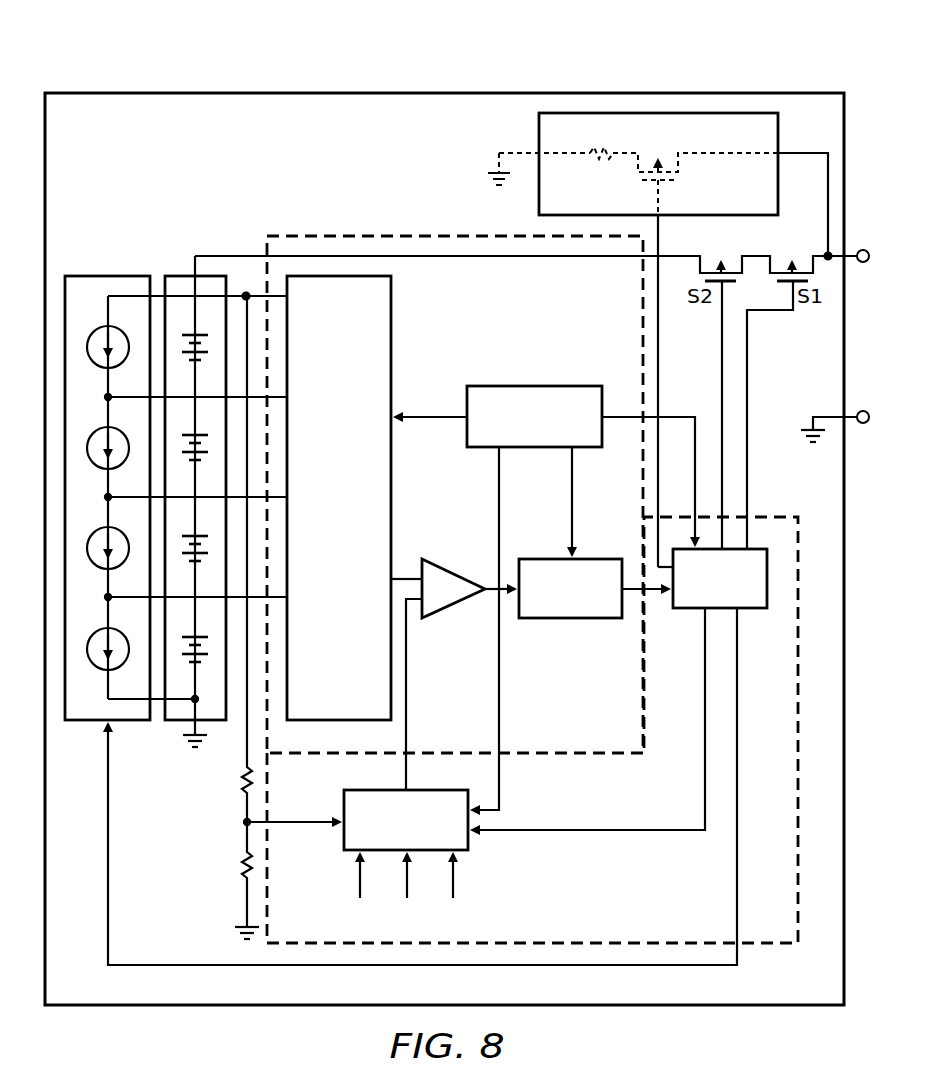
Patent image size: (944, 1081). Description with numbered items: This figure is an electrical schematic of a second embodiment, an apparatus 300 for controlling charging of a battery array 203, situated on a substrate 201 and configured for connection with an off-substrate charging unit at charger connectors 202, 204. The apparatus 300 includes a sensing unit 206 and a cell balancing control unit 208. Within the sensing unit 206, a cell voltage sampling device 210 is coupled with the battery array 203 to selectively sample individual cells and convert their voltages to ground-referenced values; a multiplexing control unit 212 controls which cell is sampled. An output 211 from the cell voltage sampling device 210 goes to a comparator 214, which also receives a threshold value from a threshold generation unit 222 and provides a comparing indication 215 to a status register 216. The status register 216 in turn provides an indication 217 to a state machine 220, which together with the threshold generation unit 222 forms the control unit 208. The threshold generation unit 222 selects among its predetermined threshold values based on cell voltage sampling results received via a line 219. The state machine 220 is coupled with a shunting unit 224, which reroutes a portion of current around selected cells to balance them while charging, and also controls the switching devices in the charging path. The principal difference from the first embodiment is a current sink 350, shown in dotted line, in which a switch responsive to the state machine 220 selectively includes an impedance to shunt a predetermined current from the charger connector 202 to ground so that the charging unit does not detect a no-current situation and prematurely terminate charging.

The apparatus 300 is at (444, 508).
The substrate 201 is at (266, 176).
The shunting unit 224 is at (100, 276).
The battery array 203 is at (178, 276).
The sensing unit 206 is at (440, 236).
The cell voltage sampling device 210 is at (320, 554).
The multiplexing control unit 212 is at (540, 386).
The output 211 is at (406, 579).
The comparator 214 is at (445, 612).
The comparing indication 215 is at (492, 585).
The status register 216 is at (576, 618).
The indication 217 is at (650, 590).
The state machine 220 is at (746, 608).
The line 219 is at (247, 750).
The threshold generation unit 222 is at (345, 840).
The cell balancing control unit 208 is at (765, 943).
The current sink 350 is at (539, 140).
The charger connector 202 is at (863, 250).
The charger connector 204 is at (863, 411).